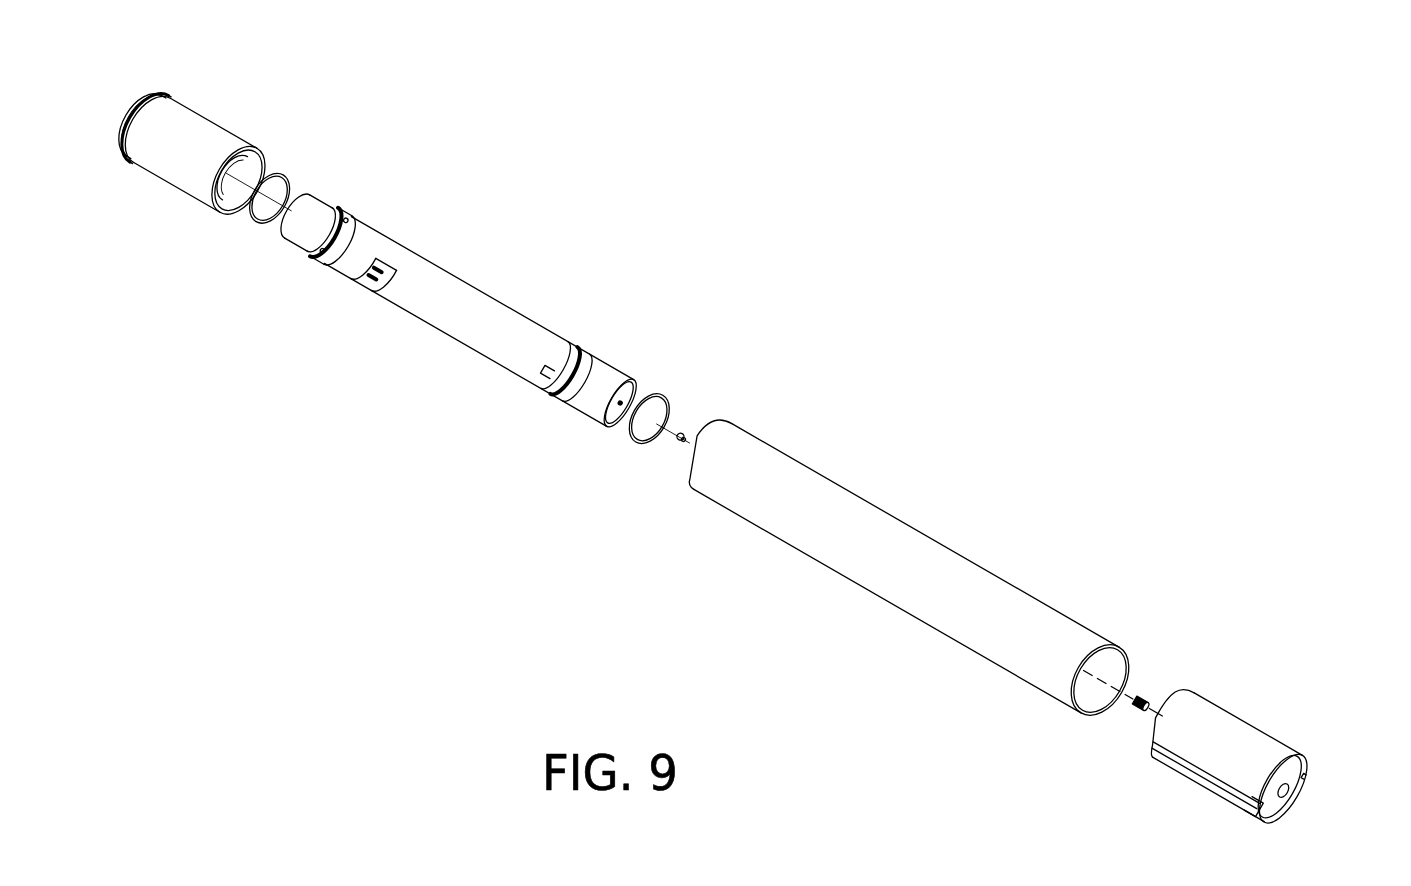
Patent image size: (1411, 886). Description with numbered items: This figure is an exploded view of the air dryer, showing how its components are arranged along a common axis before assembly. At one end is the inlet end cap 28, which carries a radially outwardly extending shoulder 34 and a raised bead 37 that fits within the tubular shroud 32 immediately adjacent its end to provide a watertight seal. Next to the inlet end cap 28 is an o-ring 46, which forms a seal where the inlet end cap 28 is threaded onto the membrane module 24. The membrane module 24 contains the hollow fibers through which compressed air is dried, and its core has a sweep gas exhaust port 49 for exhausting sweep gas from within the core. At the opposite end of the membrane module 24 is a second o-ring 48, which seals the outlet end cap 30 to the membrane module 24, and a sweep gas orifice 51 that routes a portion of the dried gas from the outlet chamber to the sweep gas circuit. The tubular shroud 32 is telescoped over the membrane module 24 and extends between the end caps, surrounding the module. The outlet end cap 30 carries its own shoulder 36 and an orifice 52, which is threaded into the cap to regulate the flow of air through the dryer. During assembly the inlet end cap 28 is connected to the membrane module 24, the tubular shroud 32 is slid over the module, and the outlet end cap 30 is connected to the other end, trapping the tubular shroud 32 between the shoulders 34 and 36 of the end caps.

The membrane module 24 is at (497, 310).
The inlet end cap 28 is at (205, 126).
The outlet end cap 30 is at (1247, 735).
The tubular shroud 32 is at (918, 550).
The shoulder 34 is at (162, 96).
The shoulder 36 is at (1282, 752).
The raised bead 37 is at (148, 130).
The o-ring 46 is at (278, 177).
The o-ring 48 is at (660, 395).
The sweep gas exhaust port 49 is at (342, 212).
The sweep gas orifice 51 is at (685, 430).
The orifice 52 is at (1145, 698).